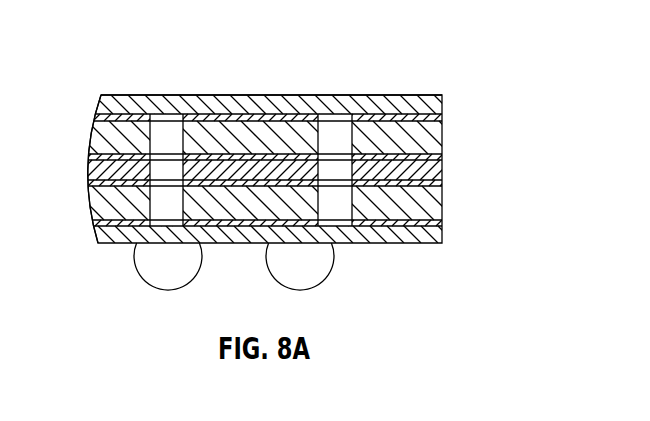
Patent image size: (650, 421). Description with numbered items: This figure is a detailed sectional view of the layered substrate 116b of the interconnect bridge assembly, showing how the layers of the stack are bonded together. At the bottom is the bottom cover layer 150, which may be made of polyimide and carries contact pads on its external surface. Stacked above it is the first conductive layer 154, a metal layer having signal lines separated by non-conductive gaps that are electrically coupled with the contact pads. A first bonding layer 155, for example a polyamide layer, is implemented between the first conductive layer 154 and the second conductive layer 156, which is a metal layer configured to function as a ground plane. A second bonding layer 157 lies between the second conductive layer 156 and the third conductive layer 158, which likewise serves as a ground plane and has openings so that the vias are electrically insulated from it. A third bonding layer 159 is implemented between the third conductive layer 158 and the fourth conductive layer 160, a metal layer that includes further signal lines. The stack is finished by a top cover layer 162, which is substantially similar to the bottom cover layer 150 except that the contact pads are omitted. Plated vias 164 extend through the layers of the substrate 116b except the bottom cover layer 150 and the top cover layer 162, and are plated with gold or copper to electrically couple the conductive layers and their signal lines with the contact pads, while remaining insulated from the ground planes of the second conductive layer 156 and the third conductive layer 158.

The substrate 116b is at (112, 95).
The plated vias 164 is at (157, 135).
The top cover layer 162 is at (435, 95).
The fourth conductive layer 160 is at (443, 113).
The third bonding layer 159 is at (443, 132).
The third conductive layer 158 is at (443, 158).
The second bonding layer 157 is at (443, 170).
The second conductive layer 156 is at (443, 182).
The first bonding layer 155 is at (443, 208).
The first conductive layer 154 is at (443, 222).
The bottom cover layer 150 is at (422, 243).